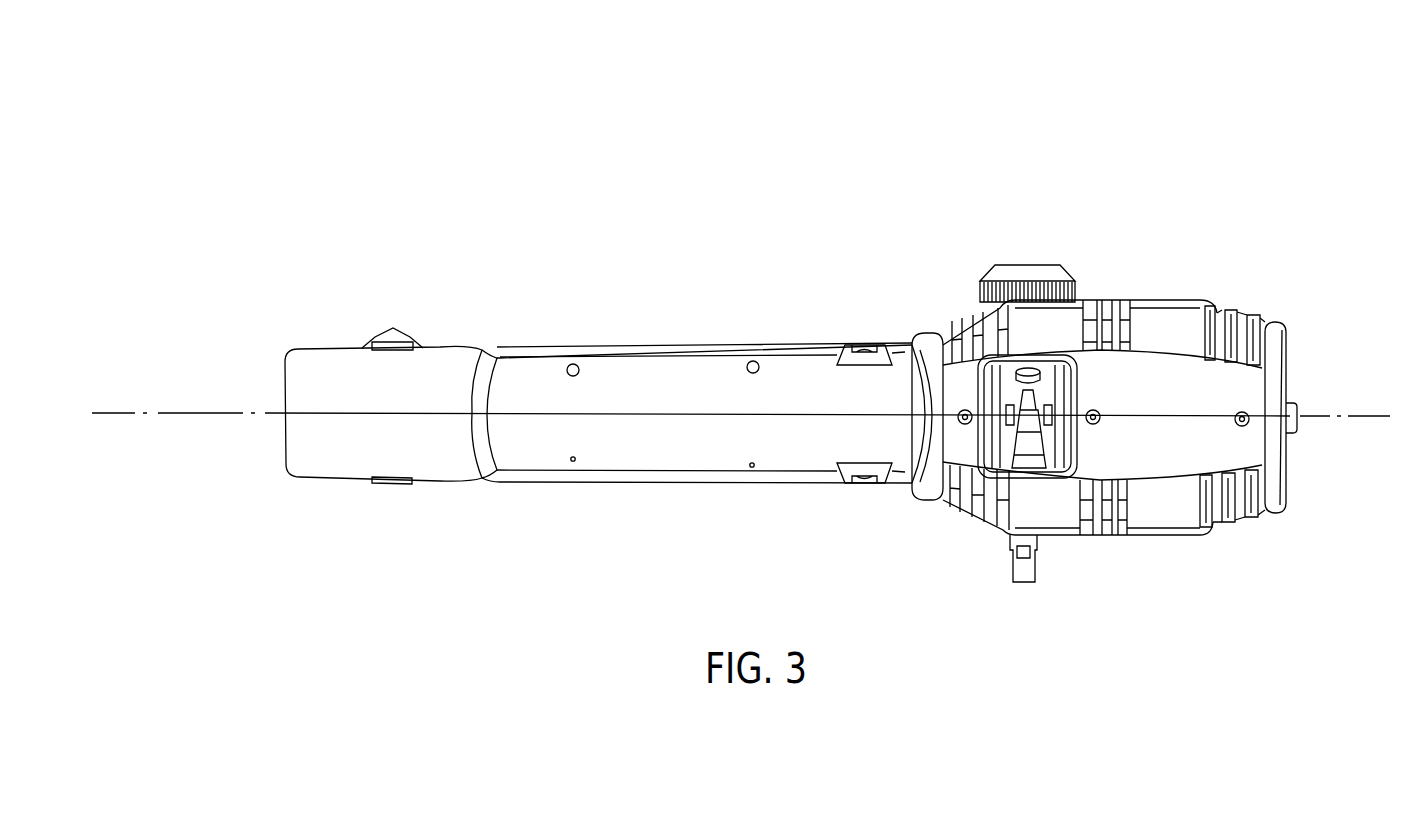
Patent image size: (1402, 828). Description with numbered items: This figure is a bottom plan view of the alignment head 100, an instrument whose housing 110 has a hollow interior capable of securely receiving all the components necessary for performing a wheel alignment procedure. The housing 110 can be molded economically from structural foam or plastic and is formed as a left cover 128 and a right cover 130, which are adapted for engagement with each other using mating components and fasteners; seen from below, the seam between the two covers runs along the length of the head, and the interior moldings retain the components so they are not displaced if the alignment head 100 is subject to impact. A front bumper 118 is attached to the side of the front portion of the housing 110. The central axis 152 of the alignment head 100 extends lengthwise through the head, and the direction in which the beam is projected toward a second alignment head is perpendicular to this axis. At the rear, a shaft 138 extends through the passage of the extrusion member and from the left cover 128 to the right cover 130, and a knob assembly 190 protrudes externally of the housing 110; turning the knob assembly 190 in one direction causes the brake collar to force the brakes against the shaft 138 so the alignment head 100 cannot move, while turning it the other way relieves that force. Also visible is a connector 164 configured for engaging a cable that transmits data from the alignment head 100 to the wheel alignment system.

The alignment head 100 is at (1095, 124).
The housing 110 is at (722, 277).
The front bumper 118 is at (393, 329).
The left cover 128 is at (663, 398).
The right cover 130 is at (697, 461).
The shaft 138 is at (1037, 575).
The central axis 152 is at (208, 412).
The connector 164 is at (1040, 395).
The knob assembly 190 is at (1060, 274).